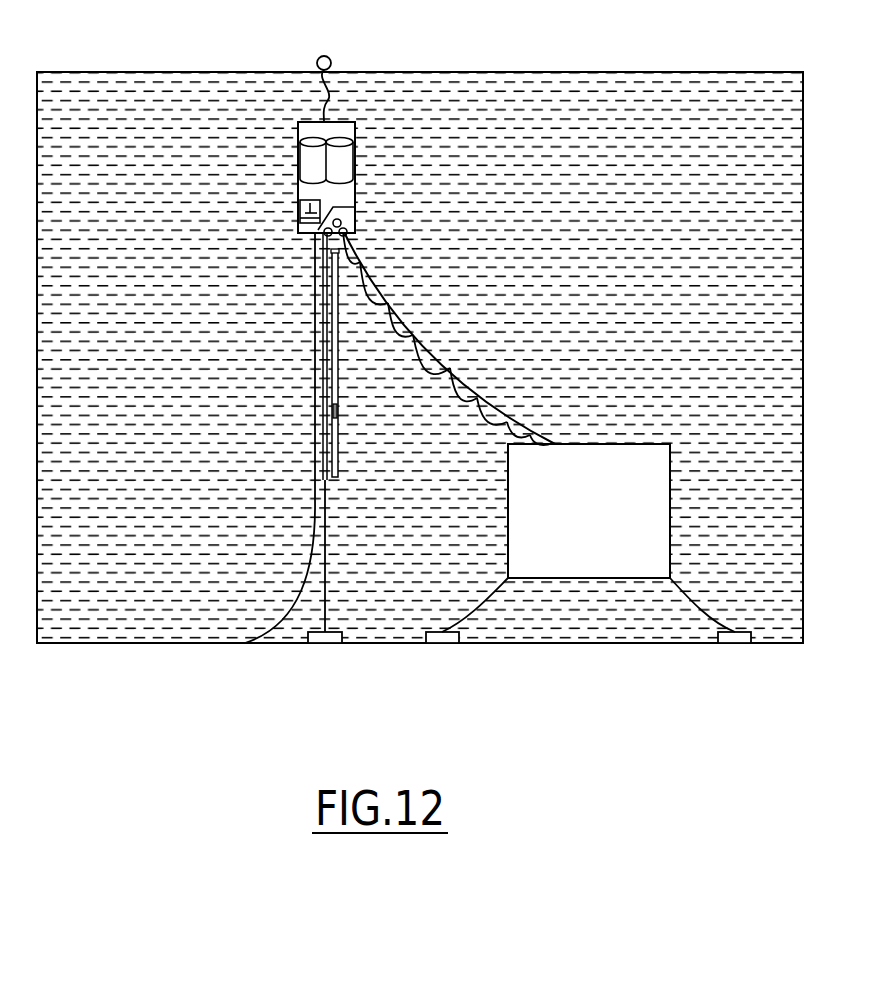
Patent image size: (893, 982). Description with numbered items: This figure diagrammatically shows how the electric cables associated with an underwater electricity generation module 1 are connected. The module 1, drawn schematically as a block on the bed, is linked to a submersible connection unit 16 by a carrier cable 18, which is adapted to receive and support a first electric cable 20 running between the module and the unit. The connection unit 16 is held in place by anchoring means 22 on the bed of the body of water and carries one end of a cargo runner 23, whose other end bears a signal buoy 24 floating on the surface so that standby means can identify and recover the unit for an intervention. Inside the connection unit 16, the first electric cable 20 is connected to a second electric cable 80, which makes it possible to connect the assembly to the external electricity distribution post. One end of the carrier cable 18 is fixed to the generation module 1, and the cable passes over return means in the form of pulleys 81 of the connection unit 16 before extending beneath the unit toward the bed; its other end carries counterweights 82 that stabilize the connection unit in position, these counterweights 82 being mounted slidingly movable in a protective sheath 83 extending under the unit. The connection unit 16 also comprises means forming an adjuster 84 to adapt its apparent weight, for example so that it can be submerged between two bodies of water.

The electricity generation module 1 is at (677, 536).
The submersible connection unit 16 is at (295, 189).
The carrier cable 18 is at (456, 362).
The electric cable 20 is at (458, 413).
The anchoring means 22 is at (347, 626).
The cargo runner 23 is at (314, 101).
The signal buoy 24 is at (338, 64).
The second electric cable 80 is at (307, 500).
The pulleys 81 is at (355, 219).
The counterweights 82 is at (344, 433).
The protective sheath 83 is at (342, 389).
The adjuster means 84 is at (295, 161).